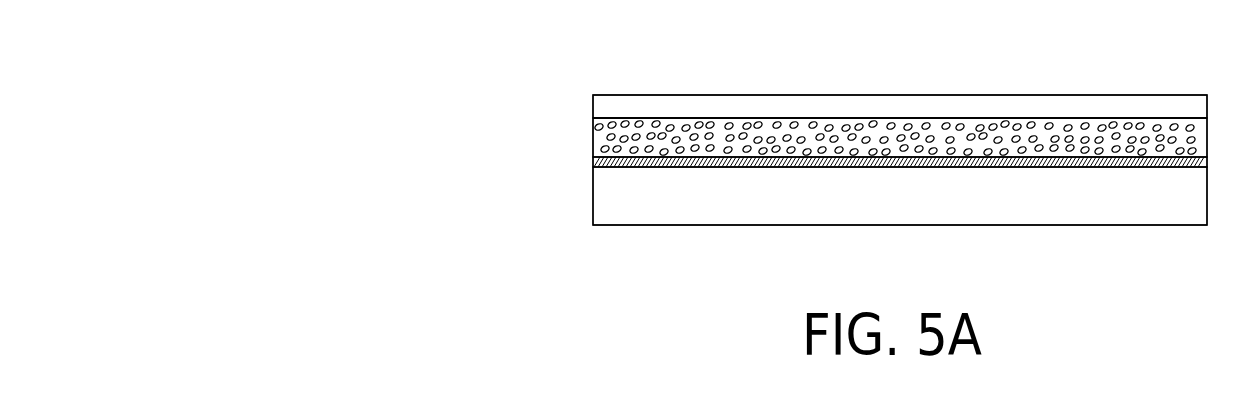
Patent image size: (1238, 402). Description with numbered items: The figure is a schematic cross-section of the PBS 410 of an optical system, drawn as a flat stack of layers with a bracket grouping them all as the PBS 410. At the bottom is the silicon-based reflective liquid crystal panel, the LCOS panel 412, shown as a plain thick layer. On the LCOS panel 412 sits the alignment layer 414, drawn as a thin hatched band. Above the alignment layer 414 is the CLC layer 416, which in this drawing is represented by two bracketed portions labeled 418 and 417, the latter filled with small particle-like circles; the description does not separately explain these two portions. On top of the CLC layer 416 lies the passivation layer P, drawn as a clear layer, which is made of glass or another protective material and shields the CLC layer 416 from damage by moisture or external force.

The PBS 410 is at (395, 21).
The passivation layer P is at (618, 108).
The CLC layer 416 is at (477, 70).
The thin film layer 418 is at (603, 121).
The particle-containing layer 417 is at (607, 143).
The alignment layer 414 is at (597, 161).
The LCOS panel 412 is at (630, 202).